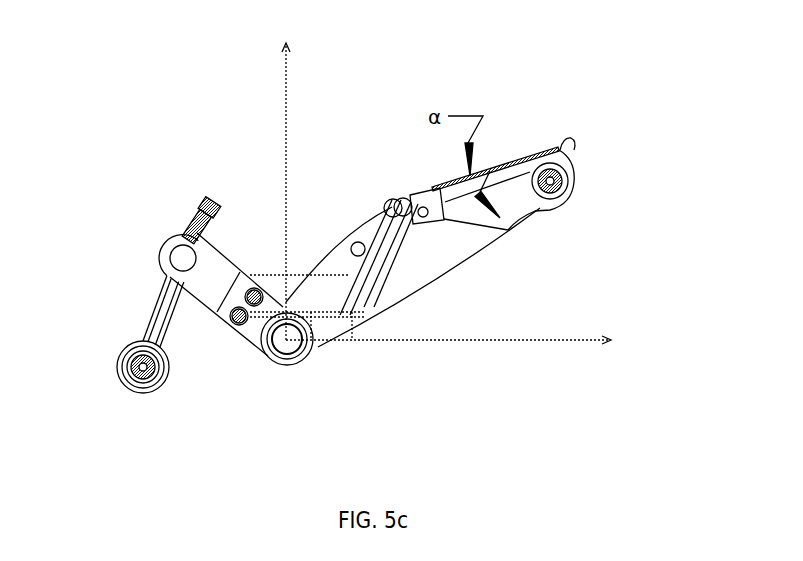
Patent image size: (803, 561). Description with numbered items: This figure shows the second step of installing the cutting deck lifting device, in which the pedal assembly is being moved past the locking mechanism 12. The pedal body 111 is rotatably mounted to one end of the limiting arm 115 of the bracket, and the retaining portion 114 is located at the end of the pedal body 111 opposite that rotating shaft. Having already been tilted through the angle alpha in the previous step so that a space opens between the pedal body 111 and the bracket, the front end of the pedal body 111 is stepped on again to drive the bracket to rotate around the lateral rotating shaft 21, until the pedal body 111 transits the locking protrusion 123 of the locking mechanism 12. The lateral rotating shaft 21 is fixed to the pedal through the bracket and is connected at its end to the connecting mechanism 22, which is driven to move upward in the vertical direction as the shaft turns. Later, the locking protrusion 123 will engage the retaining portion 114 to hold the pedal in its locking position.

The connecting mechanism 22 is at (238, 268).
The lateral rotating shaft 21 is at (298, 350).
The locking mechanism 12 is at (370, 288).
The locking protrusion 123 is at (388, 197).
The limiting arm 115 is at (468, 224).
The pedal body 111 is at (490, 171).
The retaining portion 114 is at (421, 219).